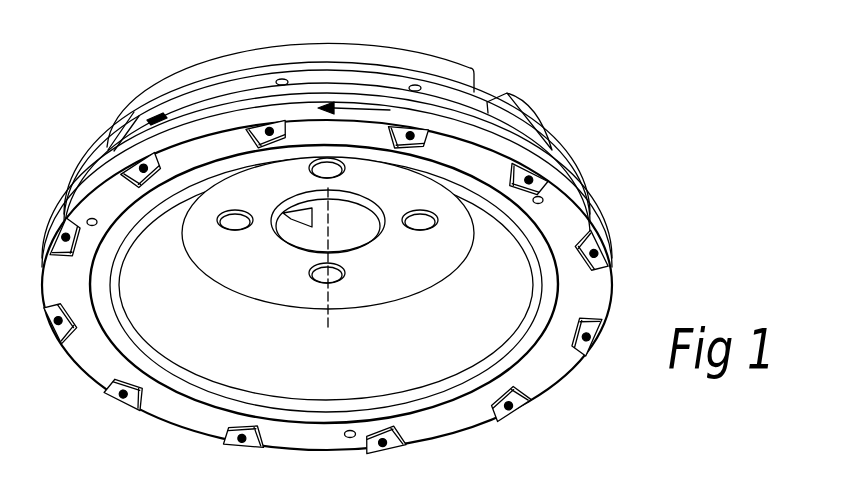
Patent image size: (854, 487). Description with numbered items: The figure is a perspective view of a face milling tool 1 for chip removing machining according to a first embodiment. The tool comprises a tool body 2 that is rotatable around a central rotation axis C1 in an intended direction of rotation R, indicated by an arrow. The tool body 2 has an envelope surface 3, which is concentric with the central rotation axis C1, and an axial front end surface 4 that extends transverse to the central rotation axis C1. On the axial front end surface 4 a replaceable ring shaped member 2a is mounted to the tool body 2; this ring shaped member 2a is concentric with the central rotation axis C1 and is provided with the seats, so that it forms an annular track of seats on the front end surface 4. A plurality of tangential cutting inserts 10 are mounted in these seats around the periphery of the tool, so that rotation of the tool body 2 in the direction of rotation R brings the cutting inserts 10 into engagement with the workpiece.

The face milling tool 1 is at (362, 229).
The tool body 2 is at (182, 82).
The replaceable ring shaped member 2a is at (580, 198).
The envelope surface 3 is at (143, 128).
The axial front end surface 4 is at (100, 203).
The tangential cutting insert 10 is at (608, 268).
The intended direction of rotation R is at (363, 110).
The central rotation axis C1 is at (328, 310).